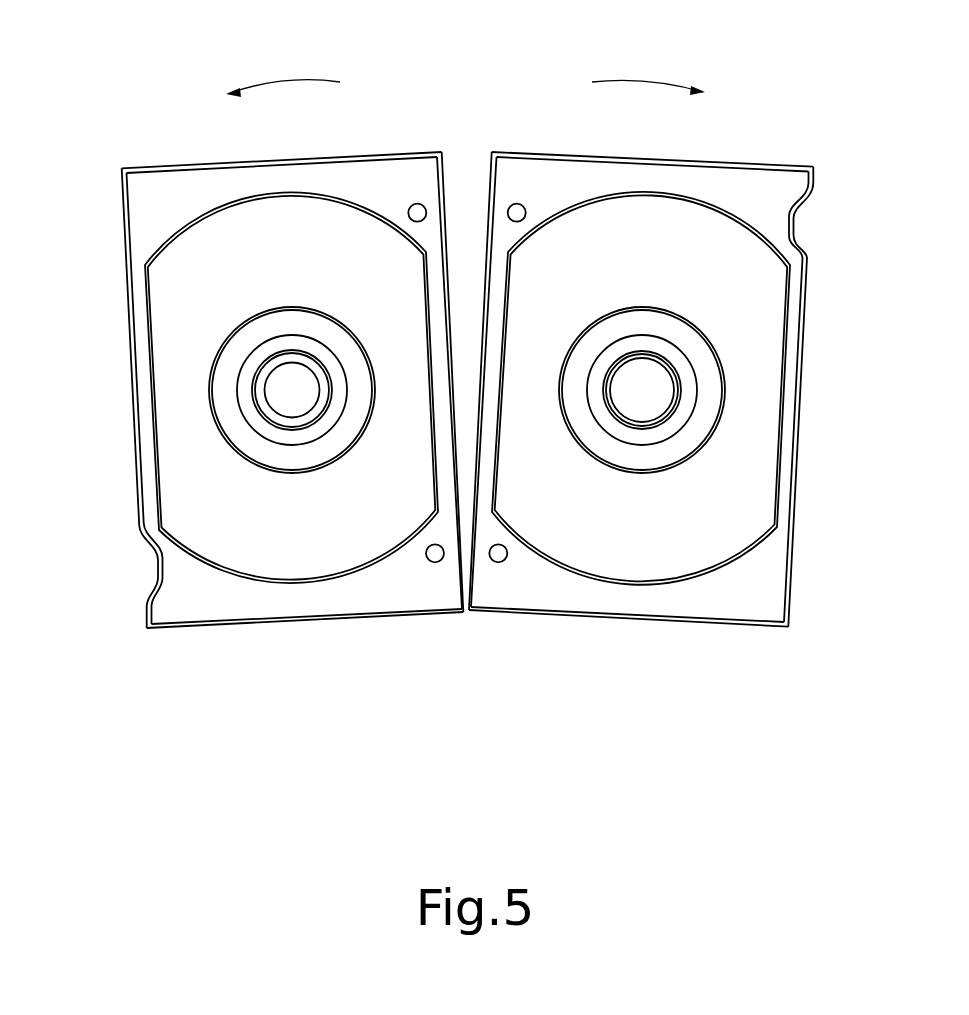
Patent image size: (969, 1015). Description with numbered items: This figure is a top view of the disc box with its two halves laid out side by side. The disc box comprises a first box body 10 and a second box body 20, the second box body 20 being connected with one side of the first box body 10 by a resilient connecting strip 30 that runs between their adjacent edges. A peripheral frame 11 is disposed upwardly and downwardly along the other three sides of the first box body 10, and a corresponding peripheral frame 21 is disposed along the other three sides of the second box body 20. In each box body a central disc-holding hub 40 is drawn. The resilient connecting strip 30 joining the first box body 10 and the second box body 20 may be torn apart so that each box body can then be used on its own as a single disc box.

The first box body 10 is at (145, 158).
The peripheral frame 11 is at (130, 315).
The second box body 20 is at (793, 158).
The peripheral frame 21 is at (798, 398).
The resilient connecting strip 30 is at (488, 185).
The disc holder 40 is at (273, 250).